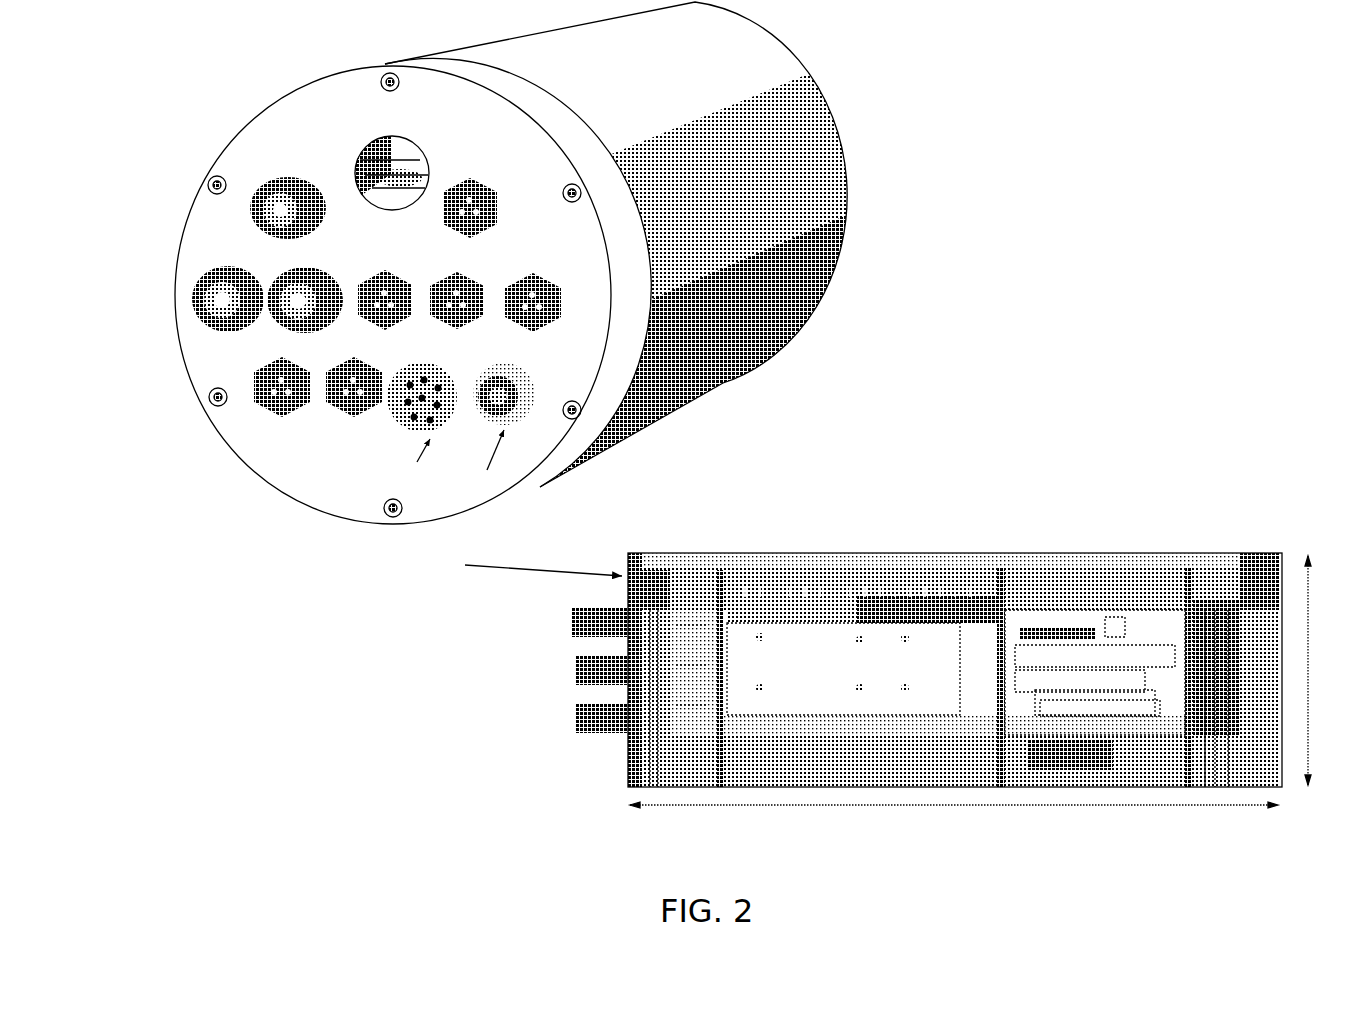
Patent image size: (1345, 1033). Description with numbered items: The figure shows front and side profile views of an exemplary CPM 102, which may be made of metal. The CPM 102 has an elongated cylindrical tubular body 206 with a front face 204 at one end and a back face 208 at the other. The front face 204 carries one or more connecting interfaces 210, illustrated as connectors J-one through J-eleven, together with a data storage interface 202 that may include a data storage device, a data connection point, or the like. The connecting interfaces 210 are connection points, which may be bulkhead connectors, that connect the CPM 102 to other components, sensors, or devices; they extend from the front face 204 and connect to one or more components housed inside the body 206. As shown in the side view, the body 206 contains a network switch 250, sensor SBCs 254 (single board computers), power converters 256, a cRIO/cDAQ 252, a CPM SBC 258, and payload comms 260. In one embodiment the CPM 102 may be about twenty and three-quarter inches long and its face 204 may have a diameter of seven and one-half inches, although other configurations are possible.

The CPM 102 is at (715, 444).
The data storage interface 202 is at (410, 128).
The front face 204 is at (325, 482).
The elongated cylindrical tubular body 206 is at (687, 407).
The back face 208 is at (847, 97).
The connecting interfaces 210 is at (192, 522).
The network switch 250 is at (878, 600).
The cRIO/cDAQ 252 is at (765, 614).
The sensor SBCs 254 is at (1049, 620).
The power converters 256 is at (1224, 597).
The CPM SBC 258 is at (1071, 770).
The payload comms 260 is at (1125, 708).